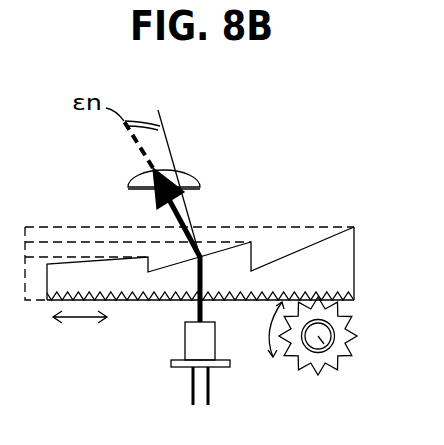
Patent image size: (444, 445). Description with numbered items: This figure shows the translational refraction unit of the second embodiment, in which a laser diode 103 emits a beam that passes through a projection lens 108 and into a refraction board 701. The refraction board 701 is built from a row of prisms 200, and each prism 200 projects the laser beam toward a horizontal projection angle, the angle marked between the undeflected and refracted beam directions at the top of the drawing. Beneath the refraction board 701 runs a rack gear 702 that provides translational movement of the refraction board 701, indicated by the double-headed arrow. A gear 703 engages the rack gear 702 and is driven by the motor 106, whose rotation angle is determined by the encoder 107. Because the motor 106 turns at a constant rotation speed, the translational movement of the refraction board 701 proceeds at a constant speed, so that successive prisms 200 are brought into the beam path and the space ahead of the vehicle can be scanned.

The projection lens 108 is at (191, 178).
The refraction board 701 is at (357, 261).
The prism 200 is at (317, 256).
The rack gear 702 is at (177, 302).
The laser diode 103 is at (183, 368).
The gear 703 is at (313, 363).
The encoder 107 is at (337, 328).
The motor 106 is at (345, 355).